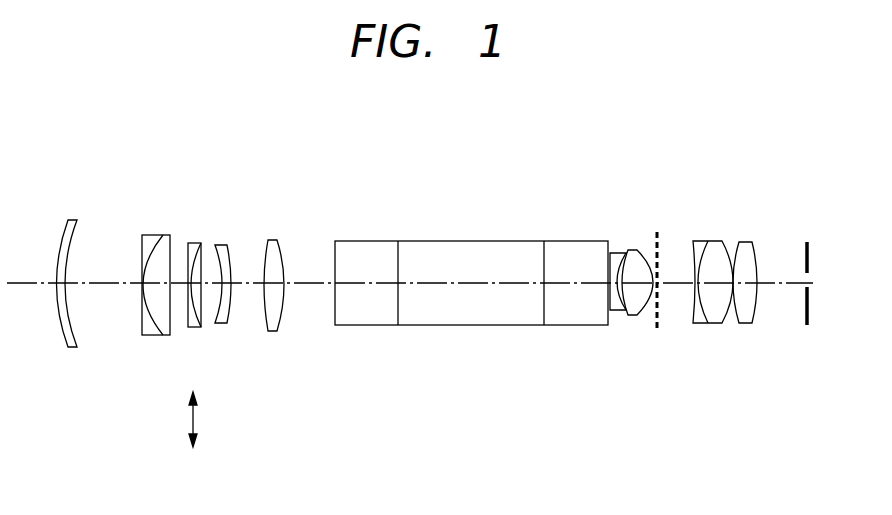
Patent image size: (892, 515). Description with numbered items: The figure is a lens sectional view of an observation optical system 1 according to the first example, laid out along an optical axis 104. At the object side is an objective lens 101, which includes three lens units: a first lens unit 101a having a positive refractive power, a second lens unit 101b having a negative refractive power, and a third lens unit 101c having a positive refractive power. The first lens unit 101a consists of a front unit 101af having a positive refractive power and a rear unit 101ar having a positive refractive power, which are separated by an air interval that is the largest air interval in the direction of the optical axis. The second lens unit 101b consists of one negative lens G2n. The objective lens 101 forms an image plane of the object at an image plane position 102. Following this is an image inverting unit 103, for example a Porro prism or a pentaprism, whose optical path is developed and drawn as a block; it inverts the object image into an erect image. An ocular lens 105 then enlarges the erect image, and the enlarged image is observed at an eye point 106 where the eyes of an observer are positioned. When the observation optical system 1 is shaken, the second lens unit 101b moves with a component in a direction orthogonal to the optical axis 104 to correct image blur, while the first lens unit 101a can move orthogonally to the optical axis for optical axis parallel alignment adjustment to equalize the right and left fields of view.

The observation optical system 1 is at (537, 135).
The objective lens 101 is at (290, 442).
The first lens unit 101a is at (177, 342).
The front unit 101af is at (92, 197).
The rear unit 101ar is at (175, 197).
The second lens unit 101b is at (205, 342).
The negative lens G2n is at (193, 243).
The third lens unit 101c is at (290, 342).
The image plane position 102 is at (657, 240).
The image inverting unit 103 is at (456, 308).
The optical axis 104 is at (300, 280).
The ocular lens 105 is at (760, 338).
The eye point 106 is at (808, 250).